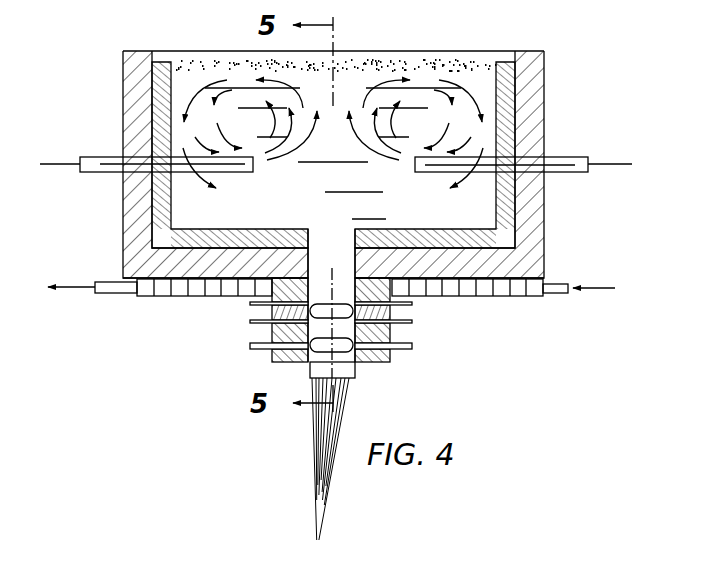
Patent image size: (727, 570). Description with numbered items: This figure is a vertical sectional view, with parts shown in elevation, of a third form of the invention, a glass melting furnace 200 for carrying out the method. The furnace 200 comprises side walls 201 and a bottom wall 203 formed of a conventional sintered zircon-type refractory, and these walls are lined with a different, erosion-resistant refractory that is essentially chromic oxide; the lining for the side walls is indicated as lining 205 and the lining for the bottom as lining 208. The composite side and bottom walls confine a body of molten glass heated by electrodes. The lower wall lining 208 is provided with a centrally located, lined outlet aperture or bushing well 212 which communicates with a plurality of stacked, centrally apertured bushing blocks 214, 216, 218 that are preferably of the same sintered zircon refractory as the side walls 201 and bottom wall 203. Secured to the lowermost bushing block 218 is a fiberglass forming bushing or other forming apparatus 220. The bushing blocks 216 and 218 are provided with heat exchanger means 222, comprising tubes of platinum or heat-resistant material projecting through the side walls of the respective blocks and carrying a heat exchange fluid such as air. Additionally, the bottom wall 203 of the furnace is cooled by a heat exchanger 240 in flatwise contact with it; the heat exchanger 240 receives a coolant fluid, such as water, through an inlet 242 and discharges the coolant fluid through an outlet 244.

The furnace 200 is at (551, 45).
The side walls 201 is at (128, 103).
The bottom wall 203 is at (433, 259).
The lining for the side walls 205 is at (158, 80).
The lining for the bottom 208 is at (471, 238).
The outlet aperture or bushing well 212 is at (318, 208).
The bushing block 214 is at (270, 298).
The bushing block 216 is at (270, 328).
The bushing block 218 is at (272, 353).
The fiberglass forming bushing 220 is at (360, 382).
The heat exchanger means 222 is at (415, 346).
The heat exchanger 240 is at (525, 300).
The right outlet port 242 is at (552, 283).
The outlet 244 is at (112, 280).